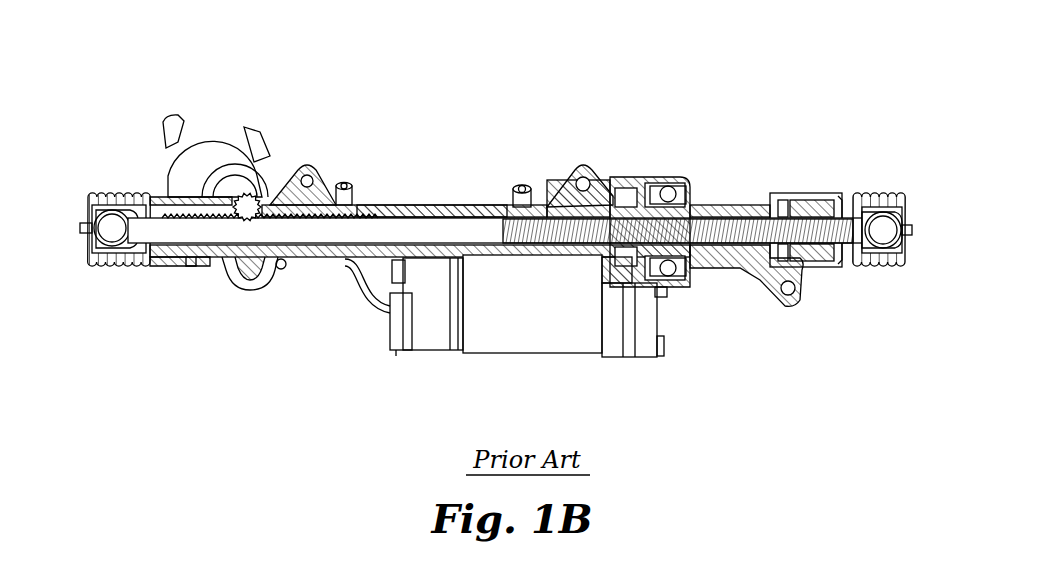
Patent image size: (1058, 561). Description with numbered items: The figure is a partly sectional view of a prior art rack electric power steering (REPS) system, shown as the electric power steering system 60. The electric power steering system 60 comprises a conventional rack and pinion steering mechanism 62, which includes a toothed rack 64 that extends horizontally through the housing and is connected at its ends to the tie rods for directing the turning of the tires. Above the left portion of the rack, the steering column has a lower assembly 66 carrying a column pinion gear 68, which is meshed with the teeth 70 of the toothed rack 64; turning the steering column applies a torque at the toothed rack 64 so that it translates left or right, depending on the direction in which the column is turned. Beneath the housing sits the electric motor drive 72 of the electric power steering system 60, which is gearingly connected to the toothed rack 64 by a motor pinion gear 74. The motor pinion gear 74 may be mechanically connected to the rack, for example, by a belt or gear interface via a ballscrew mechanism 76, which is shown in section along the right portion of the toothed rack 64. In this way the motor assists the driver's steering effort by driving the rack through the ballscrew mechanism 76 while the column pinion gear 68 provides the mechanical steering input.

The electric power steering system 60 is at (496, 239).
The rack and pinion steering mechanism 62 is at (836, 162).
The toothed rack 64 is at (472, 215).
The lower assembly 66 is at (220, 140).
The column pinion gear 68 is at (244, 216).
The teeth 70 is at (355, 210).
The electric motor drive 72 is at (482, 356).
The motor pinion gear 74 is at (644, 186).
The ballscrew mechanism 76 is at (690, 278).